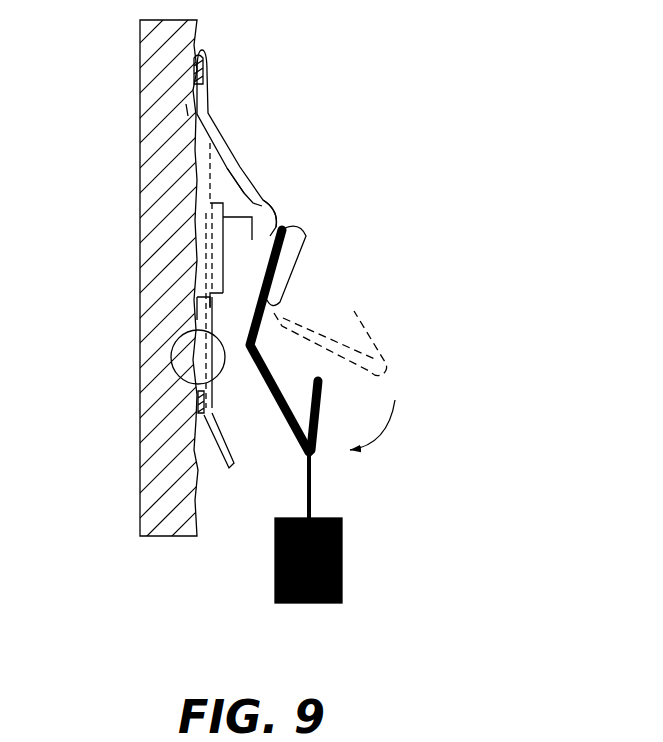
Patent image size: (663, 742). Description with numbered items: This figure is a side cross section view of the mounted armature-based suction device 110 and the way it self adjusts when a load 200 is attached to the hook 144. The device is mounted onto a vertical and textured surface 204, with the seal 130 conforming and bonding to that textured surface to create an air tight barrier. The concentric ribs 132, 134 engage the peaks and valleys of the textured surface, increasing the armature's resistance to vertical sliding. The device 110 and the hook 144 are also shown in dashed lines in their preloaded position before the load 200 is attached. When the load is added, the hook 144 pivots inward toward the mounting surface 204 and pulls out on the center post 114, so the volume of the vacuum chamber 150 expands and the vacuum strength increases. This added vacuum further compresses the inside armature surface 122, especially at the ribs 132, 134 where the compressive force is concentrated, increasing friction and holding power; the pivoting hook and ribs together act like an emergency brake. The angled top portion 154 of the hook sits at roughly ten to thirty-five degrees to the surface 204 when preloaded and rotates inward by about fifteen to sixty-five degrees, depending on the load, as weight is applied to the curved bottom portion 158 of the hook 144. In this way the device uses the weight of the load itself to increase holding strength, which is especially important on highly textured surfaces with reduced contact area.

The armature-based suction device 110 is at (227, 115).
The center post 114 is at (256, 224).
The inside armature surface 122 is at (194, 318).
The seal 130 is at (207, 67).
The inner concentric rib 132 is at (279, 219).
The outer concentric rib 134 is at (186, 110).
The hook 144 is at (388, 355).
The vacuum chamber 150 is at (228, 183).
The angled top portion 154 is at (263, 338).
The curved bottom portion 158 is at (319, 458).
The load 200 is at (344, 583).
The surface 204 is at (198, 530).